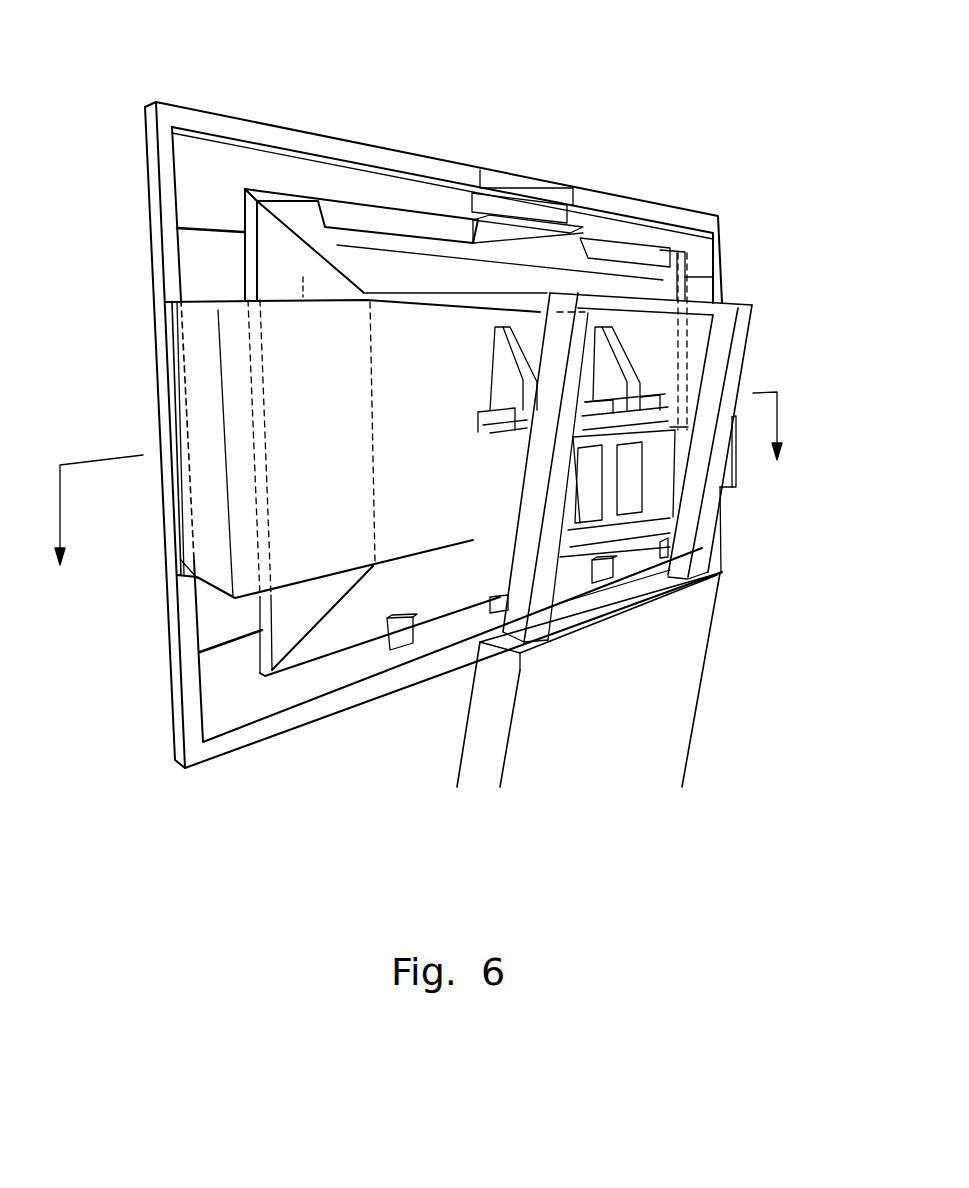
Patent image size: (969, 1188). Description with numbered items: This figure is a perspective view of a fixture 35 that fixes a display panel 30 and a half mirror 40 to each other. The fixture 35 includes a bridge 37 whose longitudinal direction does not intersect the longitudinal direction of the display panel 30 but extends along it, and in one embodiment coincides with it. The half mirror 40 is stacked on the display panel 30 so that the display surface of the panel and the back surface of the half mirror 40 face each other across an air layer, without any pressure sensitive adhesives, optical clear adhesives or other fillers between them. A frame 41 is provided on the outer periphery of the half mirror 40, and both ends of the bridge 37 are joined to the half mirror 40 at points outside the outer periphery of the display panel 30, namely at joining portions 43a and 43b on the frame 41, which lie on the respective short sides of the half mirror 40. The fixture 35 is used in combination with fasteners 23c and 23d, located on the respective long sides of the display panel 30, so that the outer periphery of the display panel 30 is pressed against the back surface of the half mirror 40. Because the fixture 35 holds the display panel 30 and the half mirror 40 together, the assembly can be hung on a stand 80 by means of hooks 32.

The display panel 30 is at (265, 672).
The hooks 32 is at (502, 387).
The fixture 35 is at (217, 592).
The bridge 37 is at (205, 352).
The half mirror 40 is at (215, 262).
The frame 41 is at (235, 125).
The joining portion 43a is at (158, 408).
The joining portion 43b is at (752, 466).
The stand 80 is at (745, 300).
The fastener 23c is at (403, 218).
The fastener 23d is at (400, 648).